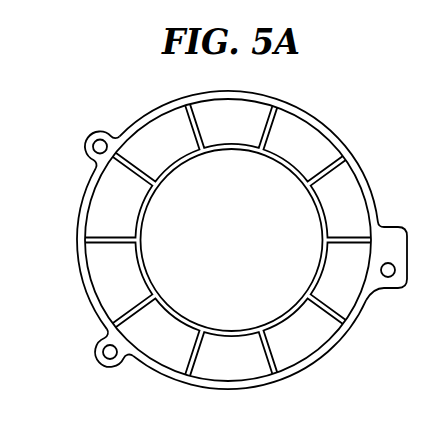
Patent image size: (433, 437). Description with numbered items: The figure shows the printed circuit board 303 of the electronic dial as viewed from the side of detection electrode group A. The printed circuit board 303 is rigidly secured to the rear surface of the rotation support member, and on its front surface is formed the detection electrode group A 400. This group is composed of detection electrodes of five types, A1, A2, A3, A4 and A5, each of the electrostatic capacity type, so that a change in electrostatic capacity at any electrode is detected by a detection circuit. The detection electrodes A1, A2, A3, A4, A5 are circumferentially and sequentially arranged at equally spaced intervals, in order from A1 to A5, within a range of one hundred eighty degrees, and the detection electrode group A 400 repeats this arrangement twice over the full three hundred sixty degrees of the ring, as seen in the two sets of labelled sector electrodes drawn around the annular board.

The printed circuit board 303 is at (92, 134).
The detection electrode group A 400 is at (95, 181).
The detection electrode A1 is at (228, 238).
The detection electrode A2 is at (229, 239).
The detection electrode A3 is at (231, 240).
The detection electrode A4 is at (229, 241).
The detection electrode A5 is at (228, 241).